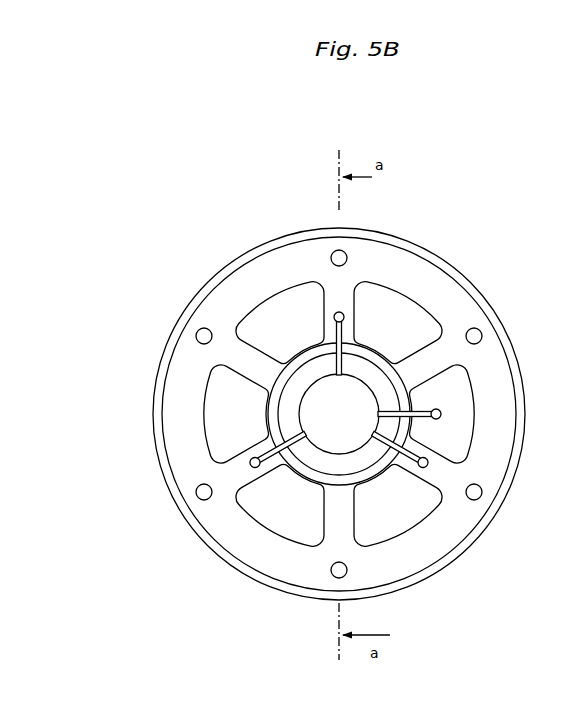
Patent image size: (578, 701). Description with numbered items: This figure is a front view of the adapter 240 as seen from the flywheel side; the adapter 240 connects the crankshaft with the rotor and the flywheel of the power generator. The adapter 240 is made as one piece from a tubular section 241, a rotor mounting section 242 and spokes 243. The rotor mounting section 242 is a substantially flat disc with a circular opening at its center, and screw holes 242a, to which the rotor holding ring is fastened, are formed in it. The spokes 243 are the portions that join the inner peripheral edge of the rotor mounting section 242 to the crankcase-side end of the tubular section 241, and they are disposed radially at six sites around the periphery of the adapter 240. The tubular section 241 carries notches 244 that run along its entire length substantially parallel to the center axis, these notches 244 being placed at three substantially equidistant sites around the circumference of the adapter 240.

The adapter 240 is at (193, 257).
The tubular section 241 is at (318, 364).
The rotor mounting section 242 is at (187, 365).
The screw holes 242a is at (203, 334).
The spokes 243 is at (357, 330).
The notches 244 is at (340, 340).